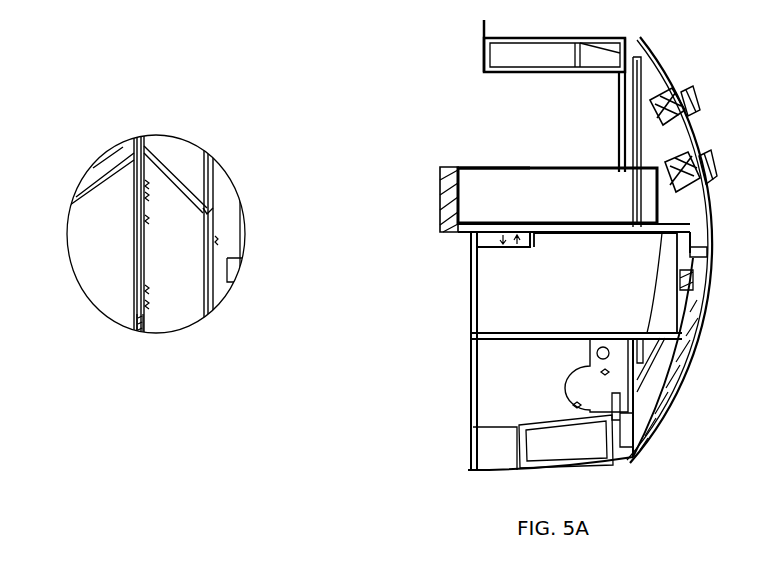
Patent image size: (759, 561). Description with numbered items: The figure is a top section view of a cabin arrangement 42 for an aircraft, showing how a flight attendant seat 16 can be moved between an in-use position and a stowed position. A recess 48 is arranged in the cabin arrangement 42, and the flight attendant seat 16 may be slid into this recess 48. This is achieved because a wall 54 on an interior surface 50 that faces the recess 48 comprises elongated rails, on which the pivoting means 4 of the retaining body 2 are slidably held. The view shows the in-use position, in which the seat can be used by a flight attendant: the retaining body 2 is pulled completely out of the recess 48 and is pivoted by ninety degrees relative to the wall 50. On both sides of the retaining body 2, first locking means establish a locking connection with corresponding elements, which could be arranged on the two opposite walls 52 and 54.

The cabin arrangement 42 is at (437, 114).
The wall 52 is at (503, 168).
The retaining body 2 is at (465, 168).
The flight attendant seat 16 is at (443, 233).
The recess 48 is at (508, 223).
The wall 54 is at (475, 232).
The interior surface 50 is at (525, 243).
The pivoting means 4 is at (145, 205).